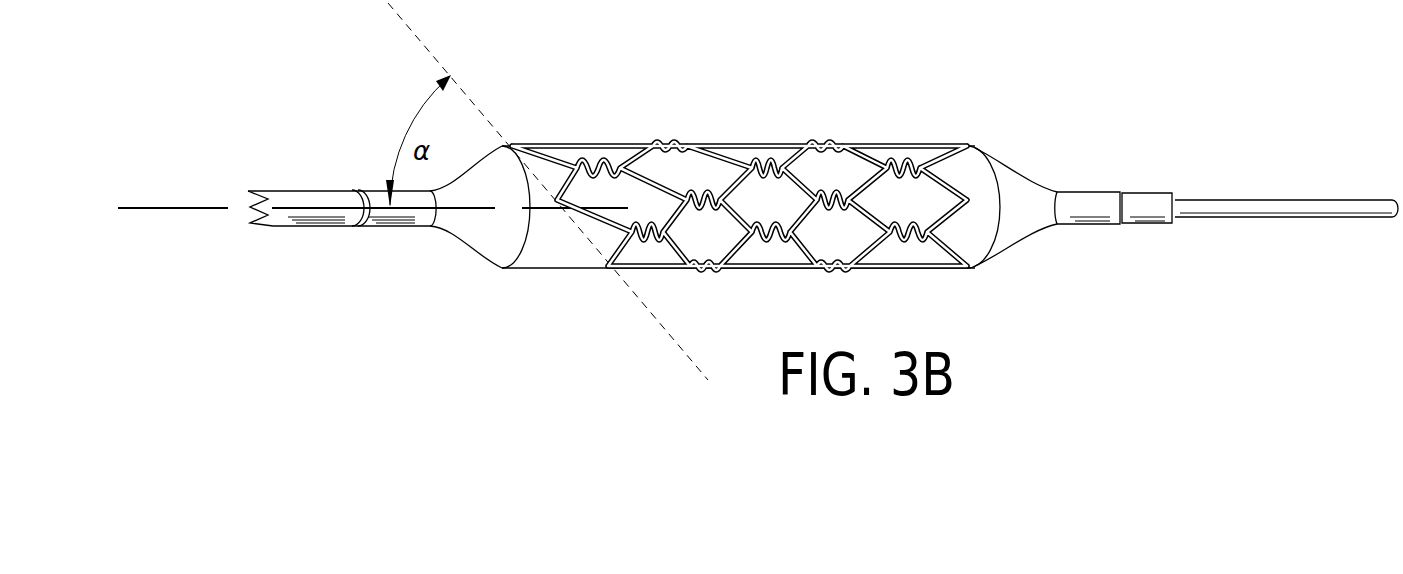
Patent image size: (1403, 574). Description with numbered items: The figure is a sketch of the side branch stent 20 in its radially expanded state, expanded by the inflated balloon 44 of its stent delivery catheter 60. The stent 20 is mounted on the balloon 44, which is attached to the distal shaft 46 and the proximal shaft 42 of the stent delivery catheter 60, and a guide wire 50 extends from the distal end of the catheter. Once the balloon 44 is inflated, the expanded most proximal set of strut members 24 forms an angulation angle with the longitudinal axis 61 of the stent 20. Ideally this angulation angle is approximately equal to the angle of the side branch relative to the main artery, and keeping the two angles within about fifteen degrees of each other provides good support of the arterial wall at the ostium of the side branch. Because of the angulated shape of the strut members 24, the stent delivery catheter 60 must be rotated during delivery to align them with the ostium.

The longitudinal axis 61 is at (185, 205).
The proximal shaft 42 is at (298, 190).
The most proximal set of strut members 24 is at (537, 142).
The stent 20 is at (754, 131).
The stent delivery catheter 60 is at (823, 168).
The balloon 44 is at (978, 270).
The distal shaft 46 is at (1153, 190).
The guide wire 50 is at (1300, 200).